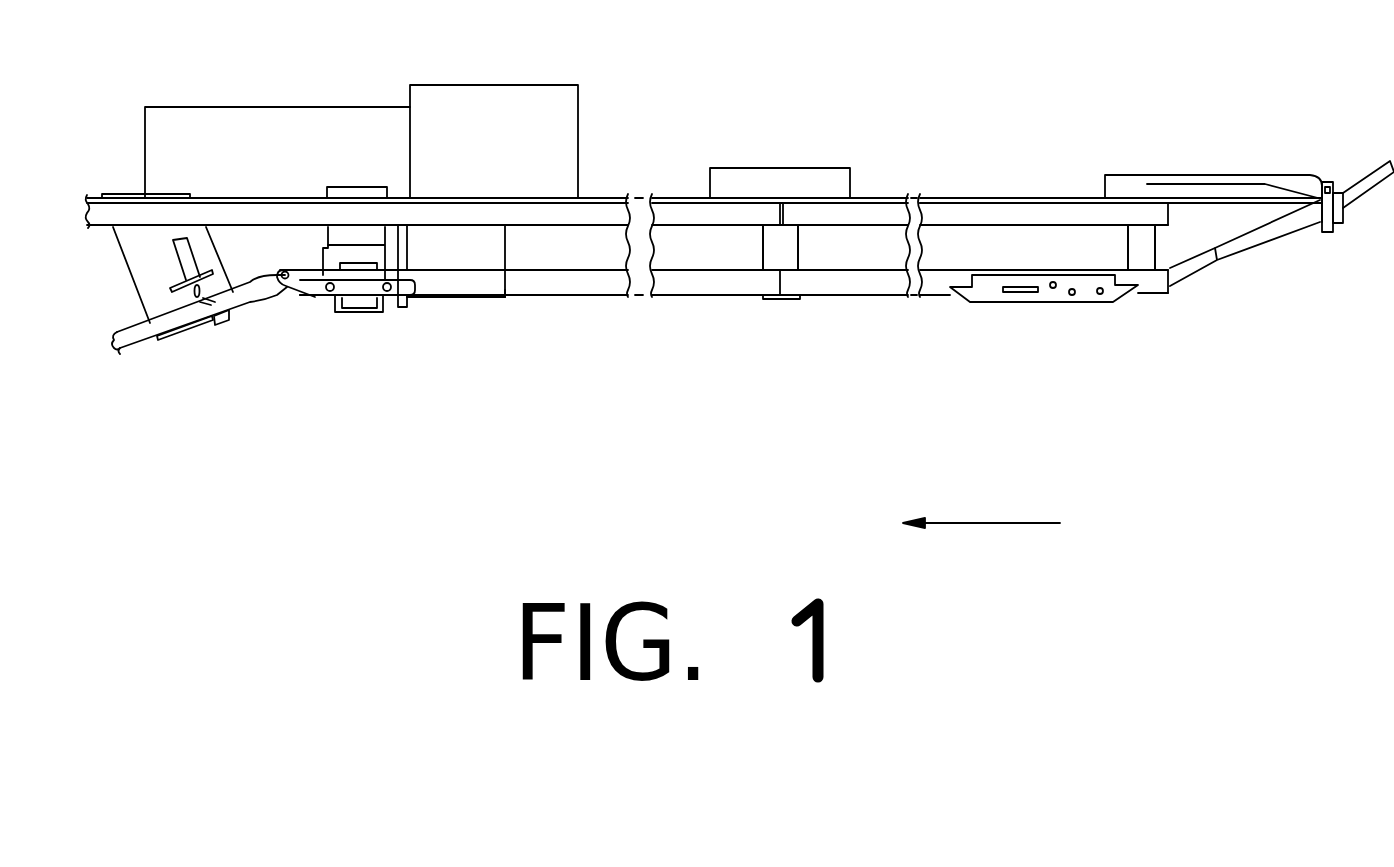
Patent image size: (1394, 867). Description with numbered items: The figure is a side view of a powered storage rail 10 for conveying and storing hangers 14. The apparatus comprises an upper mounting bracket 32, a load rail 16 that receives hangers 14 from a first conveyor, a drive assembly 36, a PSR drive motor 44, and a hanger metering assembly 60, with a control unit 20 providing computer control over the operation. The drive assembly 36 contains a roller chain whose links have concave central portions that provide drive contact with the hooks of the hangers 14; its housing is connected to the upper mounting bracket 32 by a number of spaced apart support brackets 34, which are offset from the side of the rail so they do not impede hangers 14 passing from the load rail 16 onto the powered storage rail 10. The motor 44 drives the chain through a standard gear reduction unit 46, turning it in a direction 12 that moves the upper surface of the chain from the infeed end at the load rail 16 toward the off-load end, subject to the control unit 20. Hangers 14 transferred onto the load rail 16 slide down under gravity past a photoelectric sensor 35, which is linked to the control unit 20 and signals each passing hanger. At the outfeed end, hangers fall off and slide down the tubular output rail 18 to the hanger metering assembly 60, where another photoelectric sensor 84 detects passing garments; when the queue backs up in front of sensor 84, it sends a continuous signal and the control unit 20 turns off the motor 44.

The powered storage rail 10 is at (742, 53).
The direction 12 is at (1025, 493).
The hangers 14 is at (723, 267).
The load rail 16 is at (1368, 170).
The tubular output rail 18 is at (132, 338).
The control unit 20 is at (458, 92).
The upper mounting bracket 32 is at (980, 210).
The support brackets 34 is at (1140, 232).
The photoelectric sensor 35 is at (1342, 231).
The drive assembly 36 is at (605, 322).
The PSR drive motor 44 is at (505, 297).
The gear reduction unit 46 is at (367, 312).
The hanger metering assembly 60 is at (137, 251).
The photoelectric sensor 84 is at (223, 323).